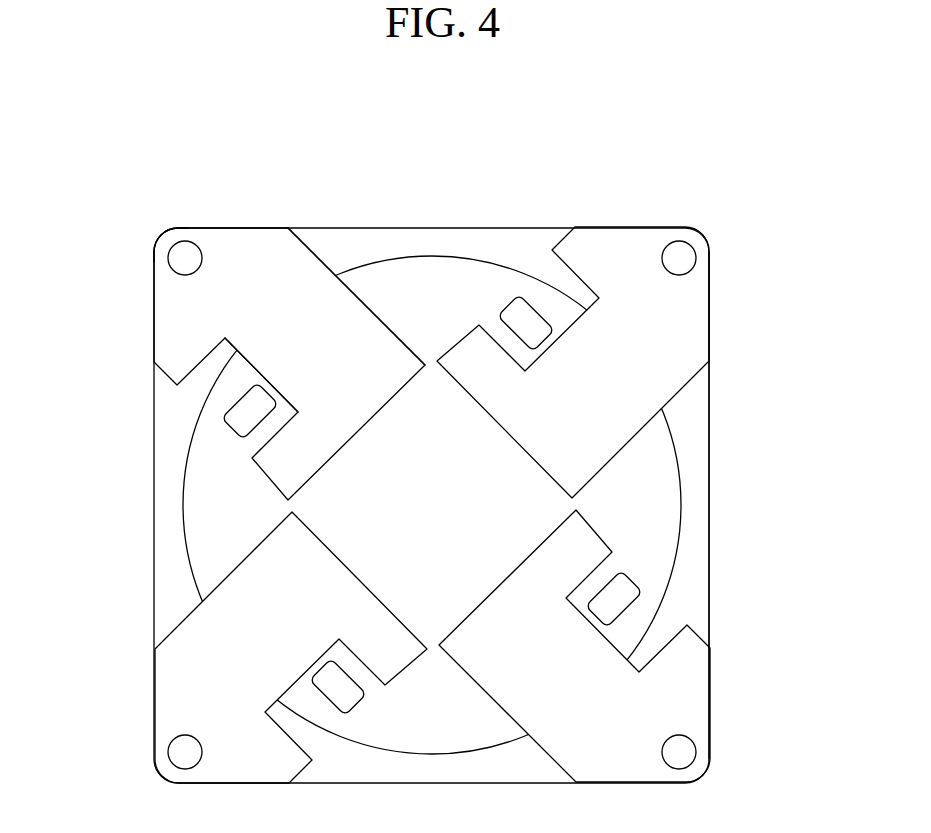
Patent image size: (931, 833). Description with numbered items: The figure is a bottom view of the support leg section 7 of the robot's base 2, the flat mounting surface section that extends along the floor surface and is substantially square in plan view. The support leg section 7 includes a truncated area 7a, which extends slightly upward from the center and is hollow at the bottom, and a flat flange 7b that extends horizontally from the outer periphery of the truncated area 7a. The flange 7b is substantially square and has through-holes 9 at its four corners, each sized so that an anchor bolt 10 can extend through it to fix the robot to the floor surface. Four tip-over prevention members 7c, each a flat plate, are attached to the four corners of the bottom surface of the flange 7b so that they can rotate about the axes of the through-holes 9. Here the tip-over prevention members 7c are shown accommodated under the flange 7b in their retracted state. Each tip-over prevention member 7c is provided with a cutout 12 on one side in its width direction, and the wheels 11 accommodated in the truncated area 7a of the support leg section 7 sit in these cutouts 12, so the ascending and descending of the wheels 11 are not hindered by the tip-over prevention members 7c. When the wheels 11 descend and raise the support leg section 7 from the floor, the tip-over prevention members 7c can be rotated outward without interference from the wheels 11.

The base 2 is at (128, 190).
The support leg section 7 is at (150, 540).
The truncated area 7a is at (681, 497).
The flange 7b is at (710, 422).
The tip-over prevention member 7c is at (360, 297).
The through-hole 9 is at (173, 253).
The anchor bolt 10 is at (168, 267).
The wheel 11 is at (222, 420).
The cutout 12 is at (240, 365).